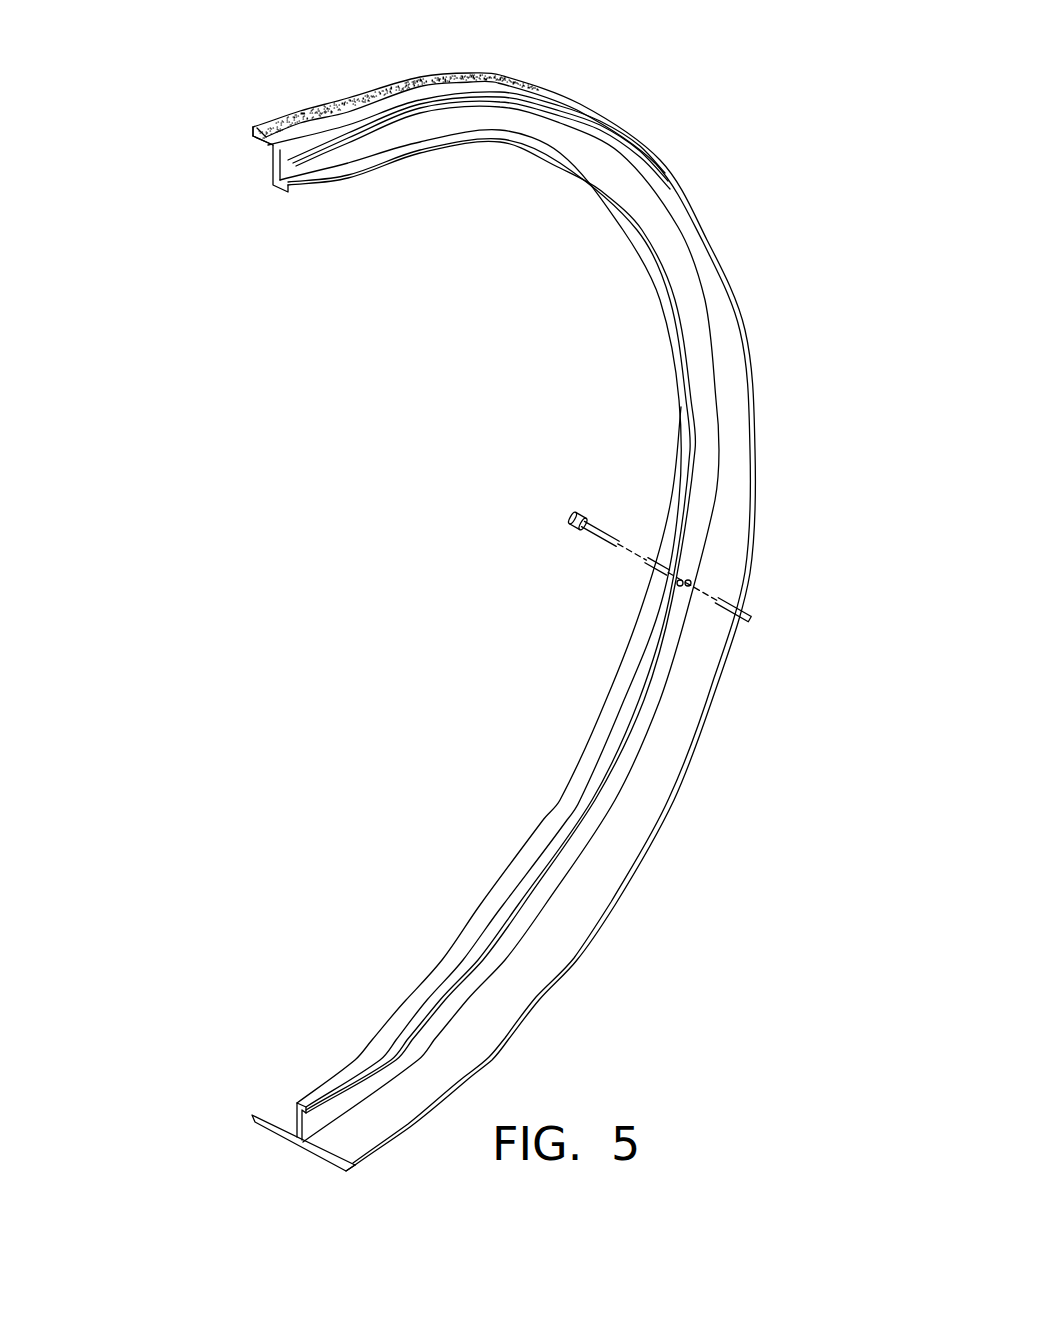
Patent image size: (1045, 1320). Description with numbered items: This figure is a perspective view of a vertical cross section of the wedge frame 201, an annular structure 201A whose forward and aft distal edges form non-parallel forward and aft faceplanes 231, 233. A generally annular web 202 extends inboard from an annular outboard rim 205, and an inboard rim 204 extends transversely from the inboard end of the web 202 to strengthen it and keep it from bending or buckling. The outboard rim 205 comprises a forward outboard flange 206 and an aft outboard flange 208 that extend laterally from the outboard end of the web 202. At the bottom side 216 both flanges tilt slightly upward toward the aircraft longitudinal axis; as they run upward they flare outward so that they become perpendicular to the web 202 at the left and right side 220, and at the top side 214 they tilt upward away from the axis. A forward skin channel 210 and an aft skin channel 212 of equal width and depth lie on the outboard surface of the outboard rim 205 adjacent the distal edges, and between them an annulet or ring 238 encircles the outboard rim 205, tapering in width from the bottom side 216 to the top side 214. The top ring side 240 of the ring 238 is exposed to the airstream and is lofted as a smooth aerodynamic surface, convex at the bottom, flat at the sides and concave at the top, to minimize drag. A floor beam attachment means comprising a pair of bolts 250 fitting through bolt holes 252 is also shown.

The wedge frame 201 is at (163, 417).
The annular structure 201A is at (280, 259).
The web 202 is at (652, 215).
The inboard rim 204 is at (372, 142).
The outboard rim 205 is at (749, 317).
The forward outboard flange 206 is at (405, 1017).
The aft outboard flange 208 is at (680, 712).
The forward skin channel 210 is at (265, 1129).
The aft skin channel 212 is at (340, 1168).
The top side 214 is at (272, 126).
The bottom side 216 is at (292, 1157).
The left and right side 220 is at (757, 548).
The forward faceplane 231 is at (551, 802).
The aft faceplane 233 is at (641, 869).
The ring 238 is at (318, 114).
The top ring side 240 is at (540, 86).
The bolts 250 is at (604, 537).
The bolt holes 252 is at (735, 608).